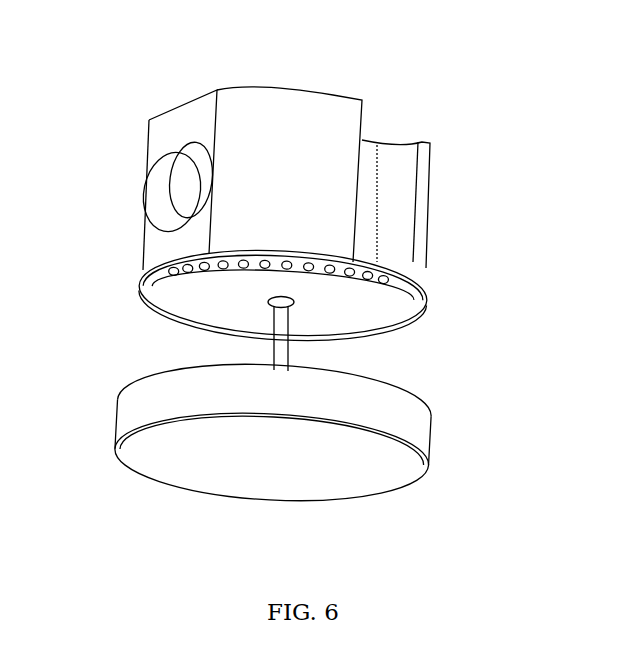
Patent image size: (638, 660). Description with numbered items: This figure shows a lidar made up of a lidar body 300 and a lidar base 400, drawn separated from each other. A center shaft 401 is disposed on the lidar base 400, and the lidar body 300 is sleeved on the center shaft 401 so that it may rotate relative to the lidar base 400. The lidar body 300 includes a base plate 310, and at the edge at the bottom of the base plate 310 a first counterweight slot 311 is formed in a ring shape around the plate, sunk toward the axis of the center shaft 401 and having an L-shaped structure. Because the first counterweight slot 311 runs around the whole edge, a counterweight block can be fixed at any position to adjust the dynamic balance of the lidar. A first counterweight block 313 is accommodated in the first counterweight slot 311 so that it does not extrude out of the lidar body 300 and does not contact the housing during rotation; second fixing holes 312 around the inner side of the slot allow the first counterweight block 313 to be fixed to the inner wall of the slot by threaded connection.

The lidar body 300 is at (338, 130).
The base plate 310 is at (211, 300).
The first counterweight slot 311 is at (416, 300).
The second fixing holes 312 is at (386, 284).
The first counterweight block 313 is at (365, 285).
The lidar base 400 is at (415, 483).
The center shaft 401 is at (272, 347).